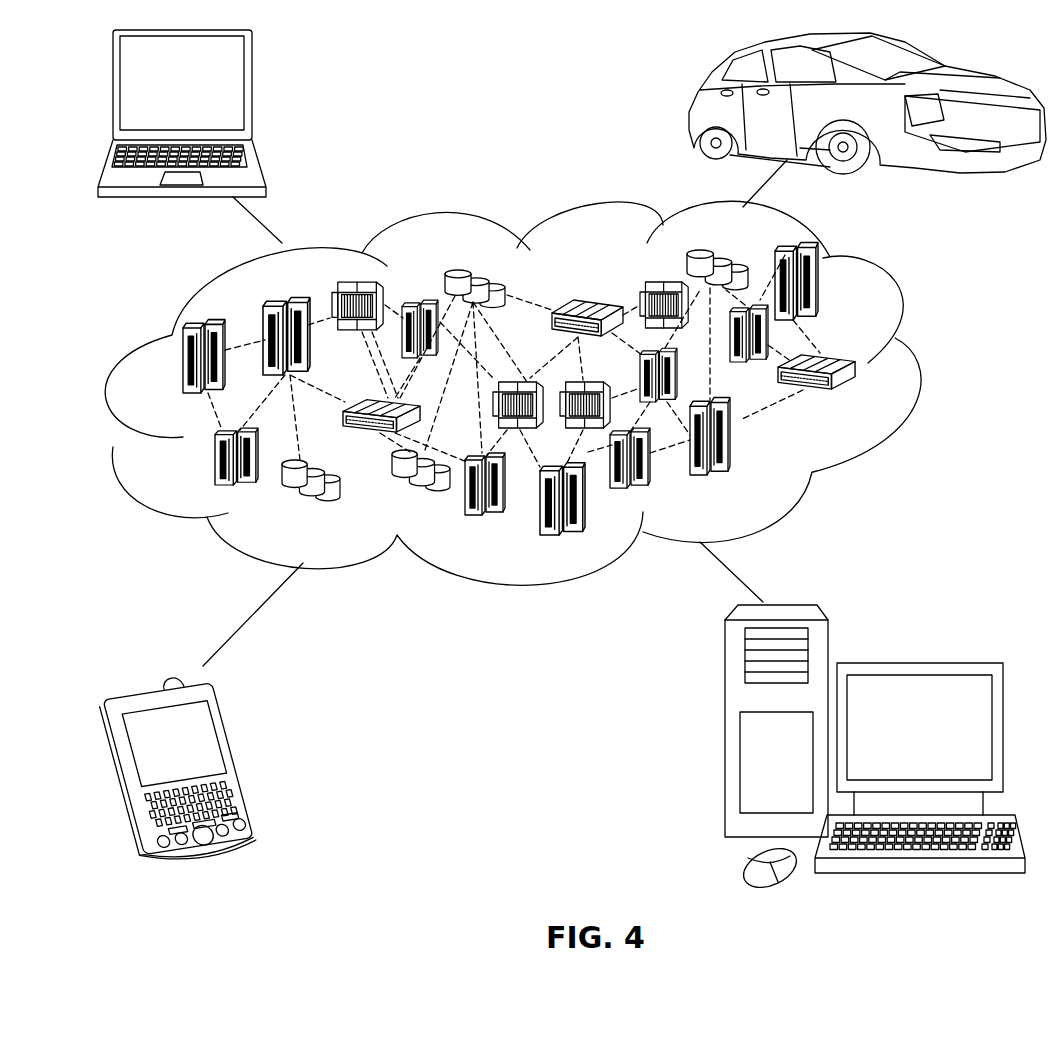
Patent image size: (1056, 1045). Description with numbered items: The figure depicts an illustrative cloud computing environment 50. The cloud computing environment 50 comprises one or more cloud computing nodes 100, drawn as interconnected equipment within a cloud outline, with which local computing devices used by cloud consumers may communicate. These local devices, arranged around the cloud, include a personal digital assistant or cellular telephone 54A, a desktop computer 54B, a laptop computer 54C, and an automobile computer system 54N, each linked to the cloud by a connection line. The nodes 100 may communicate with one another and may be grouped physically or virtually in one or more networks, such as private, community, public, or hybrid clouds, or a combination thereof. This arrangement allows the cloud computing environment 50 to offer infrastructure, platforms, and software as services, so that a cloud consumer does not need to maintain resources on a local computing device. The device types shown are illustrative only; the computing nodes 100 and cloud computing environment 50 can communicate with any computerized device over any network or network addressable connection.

The cloud computing environment 50 is at (913, 370).
The cloud computing nodes 100 is at (866, 404).
The personal digital assistant (PDA) or cellular telephone 54A is at (242, 758).
The desktop computer 54B is at (913, 662).
The laptop computer 54C is at (250, 92).
The automobile computer system 54N is at (693, 108).